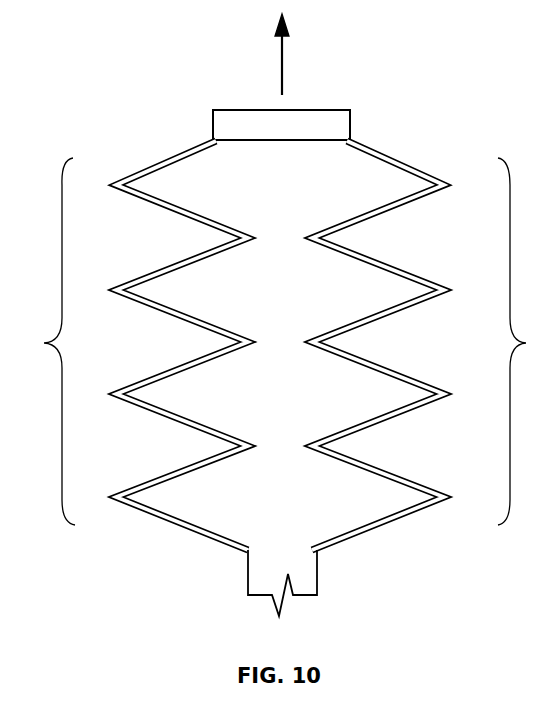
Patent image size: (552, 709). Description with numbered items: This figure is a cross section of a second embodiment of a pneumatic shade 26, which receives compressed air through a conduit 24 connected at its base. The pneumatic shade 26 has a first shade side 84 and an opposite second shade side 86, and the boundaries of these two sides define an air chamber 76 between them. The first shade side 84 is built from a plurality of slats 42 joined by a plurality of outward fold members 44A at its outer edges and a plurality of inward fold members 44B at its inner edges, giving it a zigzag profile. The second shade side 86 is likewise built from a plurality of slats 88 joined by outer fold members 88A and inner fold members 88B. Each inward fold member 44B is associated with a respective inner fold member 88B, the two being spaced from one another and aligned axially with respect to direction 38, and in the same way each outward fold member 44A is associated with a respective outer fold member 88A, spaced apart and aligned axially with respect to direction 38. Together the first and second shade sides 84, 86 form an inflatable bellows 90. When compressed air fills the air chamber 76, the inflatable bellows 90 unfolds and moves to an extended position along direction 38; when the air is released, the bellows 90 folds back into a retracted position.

The pneumatic shade 26 is at (421, 53).
The direction 38 is at (284, 60).
The slats 42 is at (172, 158).
The outward fold members 44A is at (113, 186).
The inward fold members 44B is at (257, 236).
The air chamber 76 is at (300, 324).
The first shade side 84 is at (44, 341).
The second shade side 86 is at (525, 341).
The slats 88 is at (358, 224).
The outer fold members 88A is at (442, 291).
The inner fold members 88B is at (307, 238).
The inflatable bellows 90 is at (385, 149).
The conduit 24 is at (318, 568).